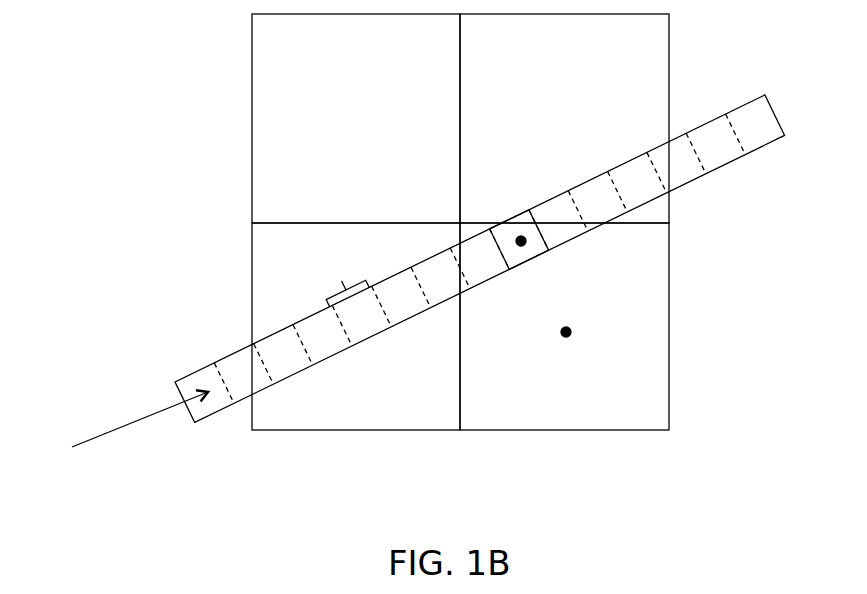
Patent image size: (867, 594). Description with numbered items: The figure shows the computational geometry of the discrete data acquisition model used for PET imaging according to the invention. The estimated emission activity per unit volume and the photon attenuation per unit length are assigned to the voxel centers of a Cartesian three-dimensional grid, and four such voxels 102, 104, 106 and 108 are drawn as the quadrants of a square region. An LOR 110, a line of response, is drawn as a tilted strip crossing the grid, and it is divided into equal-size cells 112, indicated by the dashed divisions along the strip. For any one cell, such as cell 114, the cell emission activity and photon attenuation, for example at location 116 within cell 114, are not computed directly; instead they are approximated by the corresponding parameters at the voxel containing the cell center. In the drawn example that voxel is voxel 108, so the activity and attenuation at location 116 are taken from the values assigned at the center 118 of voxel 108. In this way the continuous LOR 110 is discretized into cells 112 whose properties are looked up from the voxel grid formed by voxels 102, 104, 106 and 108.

The voxel 102 is at (373, 90).
The voxel 104 is at (566, 77).
The voxel 106 is at (432, 407).
The voxel 108 is at (638, 399).
The LOR 110 is at (768, 143).
The cells 112 is at (110, 424).
The cell 114 is at (540, 255).
The location 116 is at (521, 246).
The center of voxel 118 is at (566, 337).